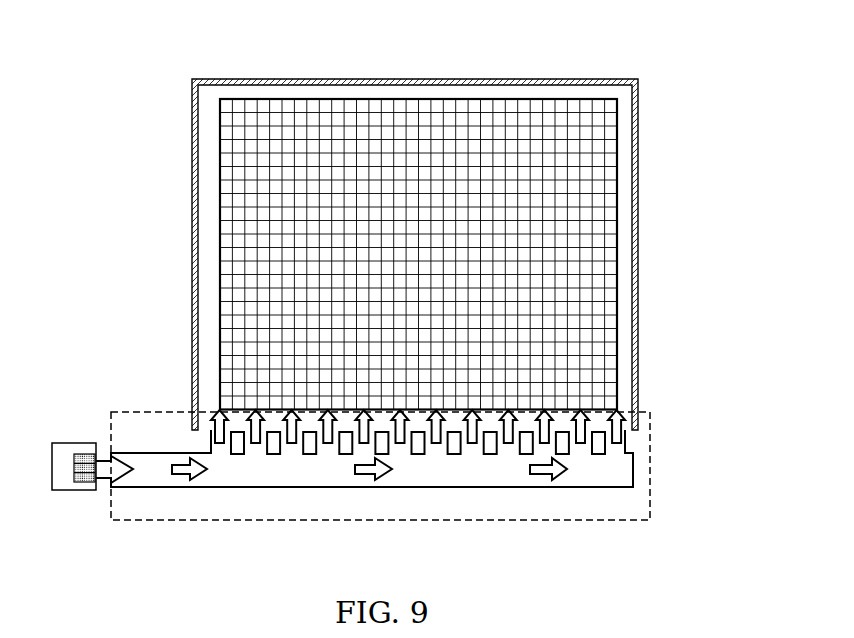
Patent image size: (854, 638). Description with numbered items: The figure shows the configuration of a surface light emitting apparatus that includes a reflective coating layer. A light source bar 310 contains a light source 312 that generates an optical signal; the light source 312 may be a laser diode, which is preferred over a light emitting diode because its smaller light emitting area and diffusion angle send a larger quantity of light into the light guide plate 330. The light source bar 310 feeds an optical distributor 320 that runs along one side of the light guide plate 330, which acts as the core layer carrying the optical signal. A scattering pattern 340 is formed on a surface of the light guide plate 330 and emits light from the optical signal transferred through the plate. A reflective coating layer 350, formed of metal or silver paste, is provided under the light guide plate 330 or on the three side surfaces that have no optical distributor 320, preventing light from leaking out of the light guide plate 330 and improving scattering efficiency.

The light source bar 310 is at (66, 466).
The light source 312 is at (83, 482).
The optical distributor 320 is at (650, 466).
The light guide plate 330 is at (463, 217).
The scattering pattern 340 is at (597, 158).
The reflective coating layer 350 is at (360, 80).